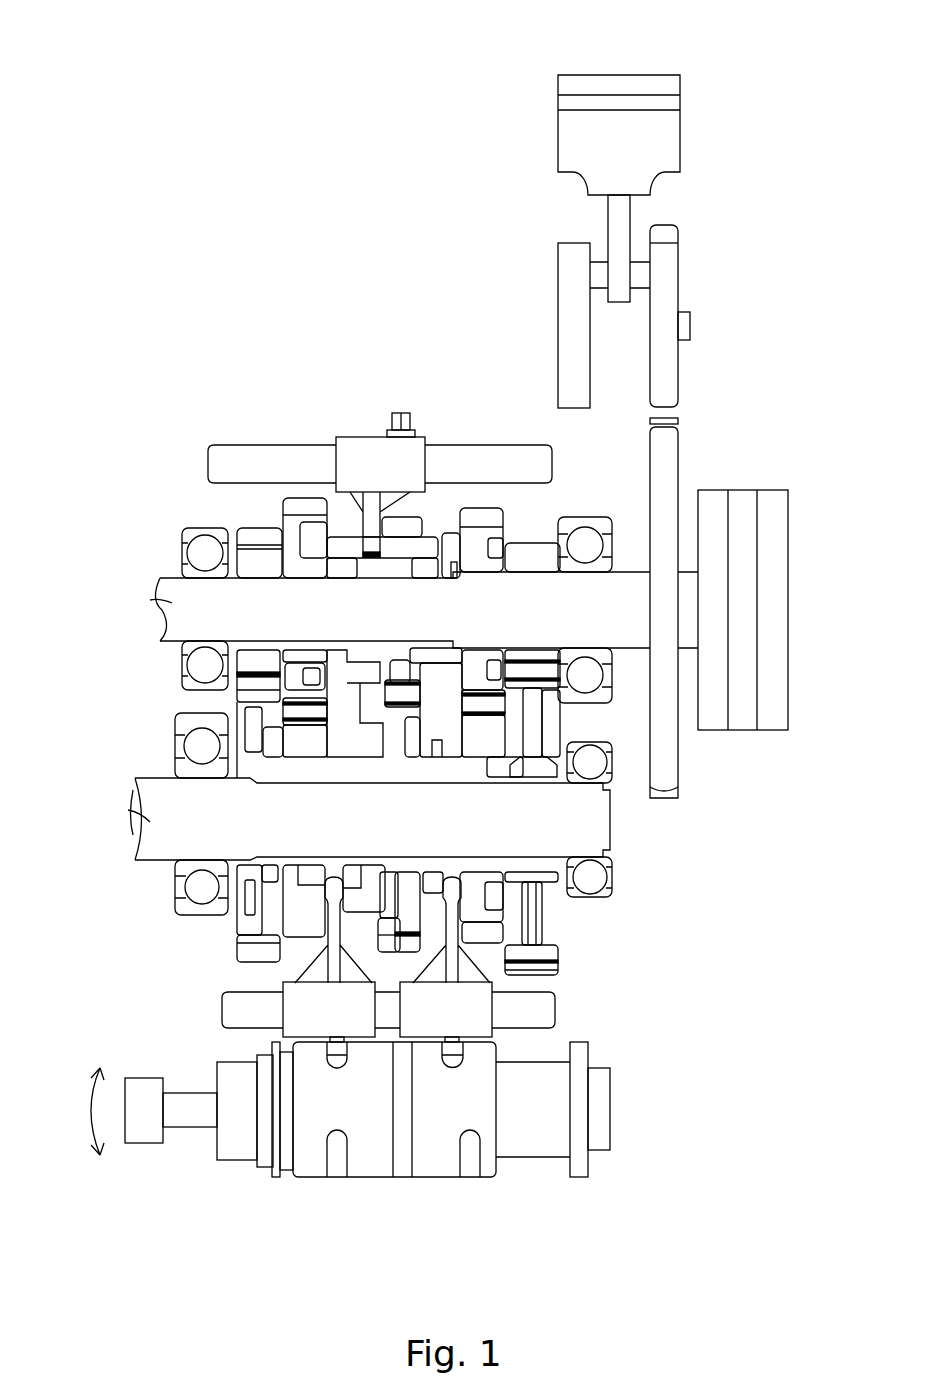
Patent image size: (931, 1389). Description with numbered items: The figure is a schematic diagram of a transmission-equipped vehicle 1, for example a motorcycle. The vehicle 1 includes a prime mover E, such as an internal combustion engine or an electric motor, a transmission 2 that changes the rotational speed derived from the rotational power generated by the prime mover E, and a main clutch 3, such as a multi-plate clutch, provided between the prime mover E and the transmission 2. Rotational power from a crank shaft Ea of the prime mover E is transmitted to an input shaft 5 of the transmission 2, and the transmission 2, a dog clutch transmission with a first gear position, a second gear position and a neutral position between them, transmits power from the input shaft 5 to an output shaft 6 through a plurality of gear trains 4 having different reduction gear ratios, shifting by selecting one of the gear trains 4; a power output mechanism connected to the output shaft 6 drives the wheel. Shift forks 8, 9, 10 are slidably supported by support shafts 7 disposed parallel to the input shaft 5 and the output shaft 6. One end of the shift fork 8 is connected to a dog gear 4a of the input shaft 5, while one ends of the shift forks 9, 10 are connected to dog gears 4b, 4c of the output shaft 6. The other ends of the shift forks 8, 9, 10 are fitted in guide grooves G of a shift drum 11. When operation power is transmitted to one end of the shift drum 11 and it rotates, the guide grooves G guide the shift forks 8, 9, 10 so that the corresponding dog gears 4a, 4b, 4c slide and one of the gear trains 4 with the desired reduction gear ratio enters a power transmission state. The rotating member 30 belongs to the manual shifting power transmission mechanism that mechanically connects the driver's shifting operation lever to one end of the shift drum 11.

The transmission-equipped vehicle 1 is at (208, 152).
The prime mover E is at (740, 92).
The crank shaft Ea is at (692, 310).
The transmission 2 is at (113, 390).
The main clutch 3 is at (790, 625).
The gear trains 4 is at (208, 518).
The dog gear 4a is at (410, 522).
The dog gear 4b is at (500, 910).
The dog gear 4c is at (298, 926).
The input shaft 5 is at (172, 598).
The output shaft 6 is at (150, 818).
The support shafts 7 is at (212, 450).
The shift fork 8 is at (365, 460).
The shift fork 9 is at (473, 1012).
The shift fork 10 is at (320, 1020).
The shift drum 11 is at (492, 1175).
The guide grooves G is at (460, 1177).
The rotating member 30 is at (150, 1148).